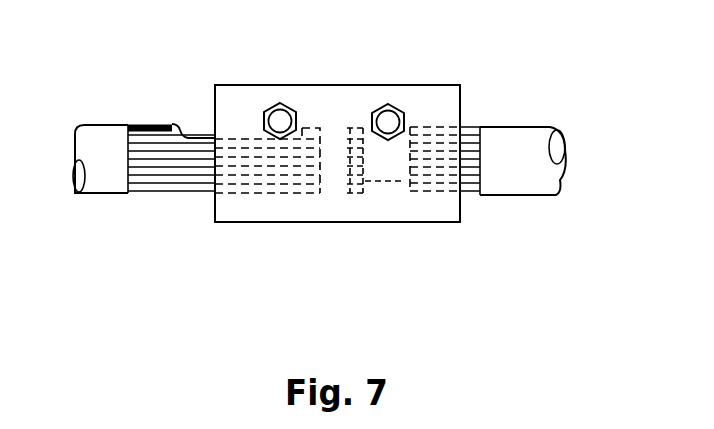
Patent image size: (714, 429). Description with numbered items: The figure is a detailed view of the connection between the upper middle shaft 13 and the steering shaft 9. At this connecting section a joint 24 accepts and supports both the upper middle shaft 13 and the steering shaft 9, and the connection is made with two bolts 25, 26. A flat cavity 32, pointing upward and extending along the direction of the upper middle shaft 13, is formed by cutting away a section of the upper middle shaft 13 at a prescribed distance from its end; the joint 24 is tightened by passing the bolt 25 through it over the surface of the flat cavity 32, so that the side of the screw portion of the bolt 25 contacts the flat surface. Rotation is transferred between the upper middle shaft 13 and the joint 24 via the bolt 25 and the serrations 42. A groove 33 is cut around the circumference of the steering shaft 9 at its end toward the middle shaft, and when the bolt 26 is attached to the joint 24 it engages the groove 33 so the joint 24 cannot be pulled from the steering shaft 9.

The steering shaft 9 is at (520, 147).
The upper middle shaft 13 is at (103, 192).
The joint 24 is at (278, 212).
The bolt 25 is at (280, 103).
The bolt 26 is at (388, 105).
The flat cavity 32 is at (197, 130).
The groove 33 is at (385, 183).
The serrations 42 is at (167, 192).